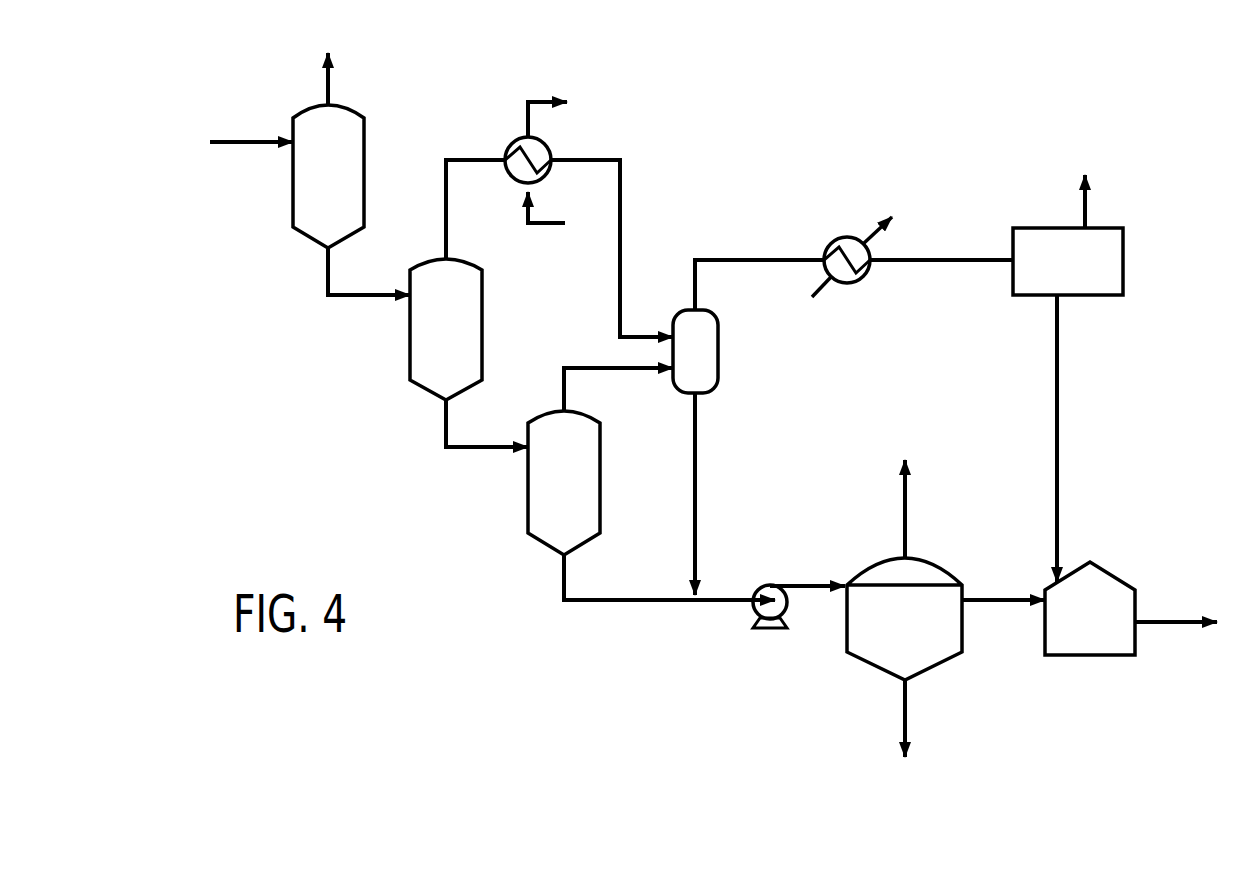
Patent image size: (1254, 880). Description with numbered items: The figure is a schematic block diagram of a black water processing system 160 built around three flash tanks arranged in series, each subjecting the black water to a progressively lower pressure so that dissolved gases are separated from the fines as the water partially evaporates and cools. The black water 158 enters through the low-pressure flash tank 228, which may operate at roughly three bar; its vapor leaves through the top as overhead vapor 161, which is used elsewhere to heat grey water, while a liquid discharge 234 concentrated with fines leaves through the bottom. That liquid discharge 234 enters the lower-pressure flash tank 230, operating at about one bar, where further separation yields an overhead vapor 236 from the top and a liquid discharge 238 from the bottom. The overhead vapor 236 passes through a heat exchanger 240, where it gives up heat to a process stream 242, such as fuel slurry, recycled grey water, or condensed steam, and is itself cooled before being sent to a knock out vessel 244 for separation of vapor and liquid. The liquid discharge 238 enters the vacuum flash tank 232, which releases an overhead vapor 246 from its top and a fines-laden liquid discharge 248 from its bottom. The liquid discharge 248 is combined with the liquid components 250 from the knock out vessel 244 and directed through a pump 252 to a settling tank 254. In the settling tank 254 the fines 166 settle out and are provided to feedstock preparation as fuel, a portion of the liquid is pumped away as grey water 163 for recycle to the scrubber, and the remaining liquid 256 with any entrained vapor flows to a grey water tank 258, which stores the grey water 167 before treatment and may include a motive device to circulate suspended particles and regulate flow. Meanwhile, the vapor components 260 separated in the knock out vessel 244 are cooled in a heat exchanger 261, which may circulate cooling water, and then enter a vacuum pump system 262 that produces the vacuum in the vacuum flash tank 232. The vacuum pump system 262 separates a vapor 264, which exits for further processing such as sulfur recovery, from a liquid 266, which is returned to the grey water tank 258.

The black water processing system 160 is at (202, 70).
The overhead vapor 161 is at (327, 83).
The low-pressure flash tank 228 is at (357, 112).
The black water 158 is at (246, 143).
The liquid discharge 234 is at (360, 300).
The lower-pressure flash tank 230 is at (466, 262).
The overhead vapor 236 is at (446, 232).
The heat exchanger 240 is at (508, 143).
The process stream 242 is at (543, 100).
The liquid discharge 238 is at (465, 450).
The vacuum flash tank 232 is at (592, 420).
The overhead vapor 246 is at (590, 366).
The knock out vessel 244 is at (720, 348).
The liquid discharge 248 is at (600, 604).
The liquid components 250 is at (697, 448).
The pump 252 is at (757, 590).
The settling tank 254 is at (878, 565).
The grey water 163 is at (905, 495).
The fines 166 is at (905, 712).
The remaining liquid 256 is at (1000, 598).
The grey water tank 258 is at (1112, 572).
The grey water 167 is at (1170, 622).
The vapor components 260 is at (737, 260).
The heat exchanger 261 is at (838, 240).
The vacuum pump system 262 is at (1123, 263).
The vapor 264 is at (1087, 208).
The liquid 266 is at (1057, 430).